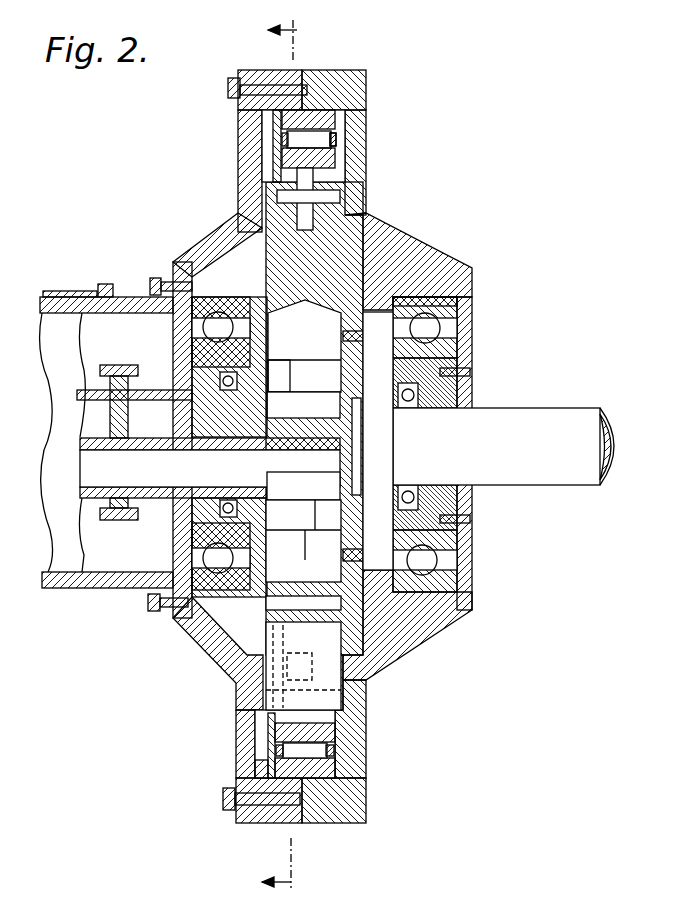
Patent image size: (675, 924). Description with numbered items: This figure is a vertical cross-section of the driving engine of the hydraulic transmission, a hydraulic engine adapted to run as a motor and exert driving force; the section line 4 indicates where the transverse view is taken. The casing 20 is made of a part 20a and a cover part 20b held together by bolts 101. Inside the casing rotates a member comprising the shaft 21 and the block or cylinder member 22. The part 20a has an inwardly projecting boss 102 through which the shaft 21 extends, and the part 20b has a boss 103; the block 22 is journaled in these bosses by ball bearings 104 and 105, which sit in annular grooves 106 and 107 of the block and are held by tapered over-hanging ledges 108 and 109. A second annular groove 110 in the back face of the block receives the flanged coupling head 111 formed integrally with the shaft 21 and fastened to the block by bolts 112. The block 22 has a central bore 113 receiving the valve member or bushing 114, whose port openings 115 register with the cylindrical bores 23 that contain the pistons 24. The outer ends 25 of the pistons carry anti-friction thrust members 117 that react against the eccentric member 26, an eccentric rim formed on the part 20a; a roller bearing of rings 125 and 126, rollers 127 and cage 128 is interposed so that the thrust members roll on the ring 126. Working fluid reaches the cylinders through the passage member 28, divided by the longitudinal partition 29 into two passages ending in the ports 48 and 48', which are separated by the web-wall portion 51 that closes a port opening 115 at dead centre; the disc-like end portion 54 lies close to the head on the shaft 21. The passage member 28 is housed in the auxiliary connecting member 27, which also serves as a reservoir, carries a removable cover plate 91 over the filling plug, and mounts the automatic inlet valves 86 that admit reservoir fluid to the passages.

The casing 20 is at (420, 132).
The casing part 20a is at (420, 759).
The casing part 20b is at (238, 758).
The block or cylinder member 22 is at (428, 290).
The annular groove 106 is at (445, 295).
The second annular groove 110 is at (422, 630).
The bores 23 is at (385, 265).
The central bore 113 is at (310, 362).
The valve member or bushing 114 is at (272, 374).
The port 48 is at (303, 406).
The port 48' is at (303, 487).
The boss 103 is at (200, 385).
The annular groove 107 is at (220, 298).
The longitudinal partition 29 is at (98, 436).
The web-wall portion 51 is at (300, 462).
The port openings 115 is at (303, 555).
The passage member 28 is at (82, 500).
The removable cover plate 91 is at (68, 300).
The ball bearing 105 is at (205, 290).
The auxiliary connecting member 27 is at (82, 590).
The over-hanging ledge 109 is at (183, 612).
The automatic inlet valves 86 is at (108, 368).
The bolts 112 is at (420, 320).
The ball bearing 104 is at (430, 305).
The boss 102 is at (420, 372).
The over-hanging ledge 108 is at (457, 598).
The shaft 21 is at (550, 408).
The flanged coupling head 111 is at (380, 432).
The end portion 54 is at (362, 462).
The outer ends 25 is at (275, 176).
The eccentric member 26 is at (320, 115).
The ring 125 is at (330, 135).
The ring 126 is at (335, 160).
The rollers 127 is at (340, 145).
The cage 128 is at (330, 745).
The pistons 24 is at (345, 205).
The anti-friction thrust members 117 is at (300, 200).
The bolts 101 is at (228, 90).
The section line 4 is at (262, 460).